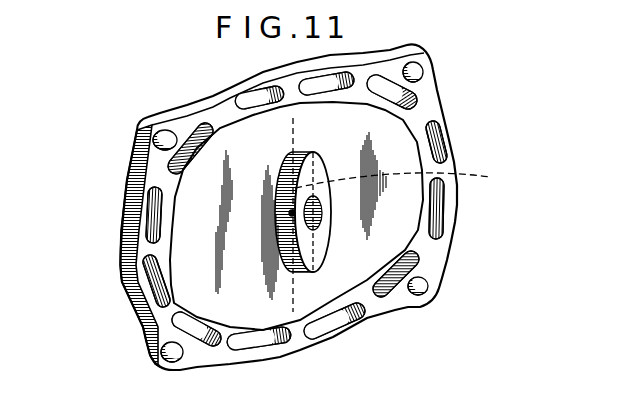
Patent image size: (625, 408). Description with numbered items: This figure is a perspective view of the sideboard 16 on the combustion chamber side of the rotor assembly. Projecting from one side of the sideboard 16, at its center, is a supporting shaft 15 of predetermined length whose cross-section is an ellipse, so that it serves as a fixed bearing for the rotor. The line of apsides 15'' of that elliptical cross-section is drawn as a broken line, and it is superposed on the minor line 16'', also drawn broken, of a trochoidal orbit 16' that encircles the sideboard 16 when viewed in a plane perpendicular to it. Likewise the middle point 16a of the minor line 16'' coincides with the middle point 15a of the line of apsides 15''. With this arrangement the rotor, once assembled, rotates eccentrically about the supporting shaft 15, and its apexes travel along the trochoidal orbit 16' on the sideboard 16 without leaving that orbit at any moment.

The supporting shaft 15 is at (345, 242).
The middle point of the line of apsides 15a is at (292, 213).
The line of apsides 15'' is at (412, 177).
The sideboard 16 is at (284, 207).
The middle point of the minor line 16a is at (292, 213).
The trochoidal orbit 16' is at (130, 253).
The minor line 16'' is at (191, 128).